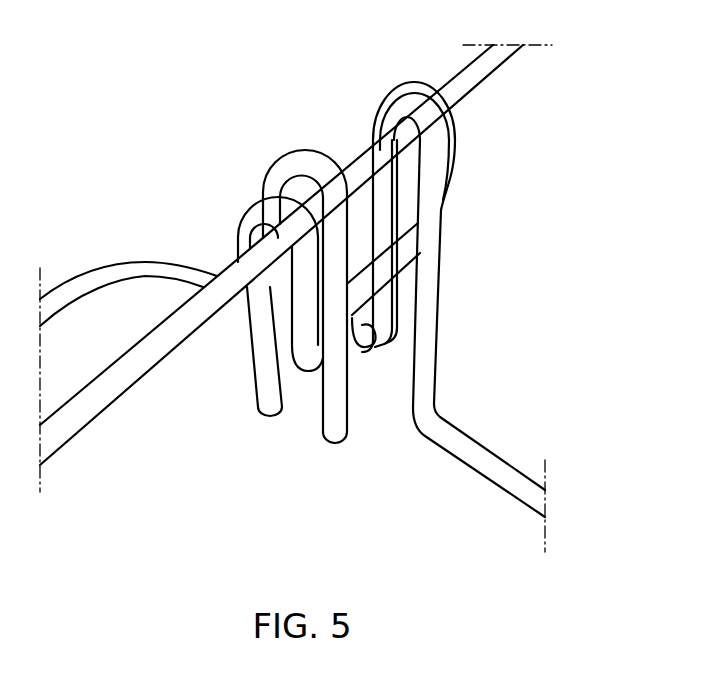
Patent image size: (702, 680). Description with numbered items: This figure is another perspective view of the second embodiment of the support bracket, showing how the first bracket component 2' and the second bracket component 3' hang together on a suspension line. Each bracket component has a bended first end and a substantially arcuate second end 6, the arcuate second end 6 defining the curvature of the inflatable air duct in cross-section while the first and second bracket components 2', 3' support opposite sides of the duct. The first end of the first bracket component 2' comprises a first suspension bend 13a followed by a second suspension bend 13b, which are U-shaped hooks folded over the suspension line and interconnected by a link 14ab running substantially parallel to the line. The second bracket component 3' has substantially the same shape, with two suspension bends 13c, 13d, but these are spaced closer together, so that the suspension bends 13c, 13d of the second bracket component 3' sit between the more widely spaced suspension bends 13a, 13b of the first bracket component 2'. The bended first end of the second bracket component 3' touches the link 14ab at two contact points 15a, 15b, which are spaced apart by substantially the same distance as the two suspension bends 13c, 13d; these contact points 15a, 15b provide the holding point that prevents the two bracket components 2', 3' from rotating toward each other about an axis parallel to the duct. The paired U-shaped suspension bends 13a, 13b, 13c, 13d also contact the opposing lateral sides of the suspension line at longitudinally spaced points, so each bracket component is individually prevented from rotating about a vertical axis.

The second end 6 is at (98, 265).
The first bracket component 2' is at (128, 239).
The second bracket component 3' is at (418, 350).
The first suspension bend 13a is at (246, 198).
The second suspension bend 13b is at (413, 82).
The suspension bend 13c is at (282, 152).
The suspension bend 13d is at (378, 98).
The link 14ab is at (392, 257).
The contact point 15a is at (295, 372).
The contact point 15b is at (422, 232).